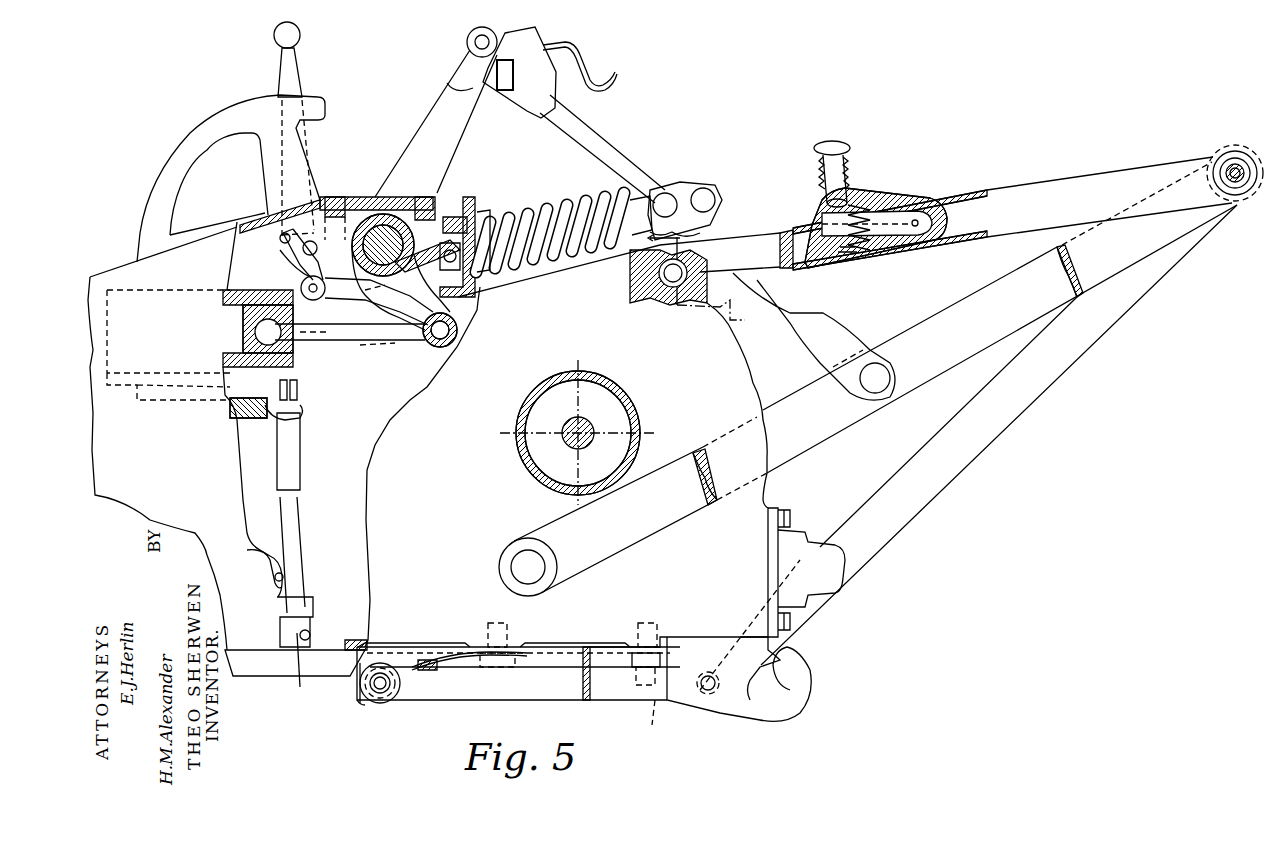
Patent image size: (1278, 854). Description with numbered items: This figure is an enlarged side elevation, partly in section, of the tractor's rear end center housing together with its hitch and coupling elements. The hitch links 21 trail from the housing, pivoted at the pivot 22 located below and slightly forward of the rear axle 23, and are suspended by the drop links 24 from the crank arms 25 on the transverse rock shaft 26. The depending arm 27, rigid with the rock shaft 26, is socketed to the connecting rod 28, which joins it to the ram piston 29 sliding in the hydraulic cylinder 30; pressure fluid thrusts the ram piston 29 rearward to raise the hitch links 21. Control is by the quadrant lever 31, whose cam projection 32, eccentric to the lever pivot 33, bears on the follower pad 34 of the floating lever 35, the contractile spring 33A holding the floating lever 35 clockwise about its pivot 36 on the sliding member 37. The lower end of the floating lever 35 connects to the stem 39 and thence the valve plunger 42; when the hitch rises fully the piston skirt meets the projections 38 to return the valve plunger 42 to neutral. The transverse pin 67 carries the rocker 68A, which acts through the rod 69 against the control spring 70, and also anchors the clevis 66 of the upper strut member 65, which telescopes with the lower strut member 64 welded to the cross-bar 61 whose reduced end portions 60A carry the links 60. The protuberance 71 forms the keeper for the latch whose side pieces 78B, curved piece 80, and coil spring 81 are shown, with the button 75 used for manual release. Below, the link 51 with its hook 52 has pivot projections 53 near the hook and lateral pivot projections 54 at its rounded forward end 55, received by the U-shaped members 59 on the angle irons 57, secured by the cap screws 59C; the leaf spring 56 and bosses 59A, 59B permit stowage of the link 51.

The hitch links 21 is at (935, 330).
The pivot 22 is at (533, 577).
The rear axle 23 is at (578, 433).
The drop links 24 is at (610, 140).
The crank arms 25 is at (450, 125).
The rock shaft 26 is at (377, 233).
The depending arm 27 is at (458, 318).
The connecting rod 28 is at (383, 343).
The ram piston 29 is at (240, 310).
The hydraulic cylinder 30 is at (227, 283).
The quadrant lever 31 is at (283, 72).
The cam projection 32 is at (316, 245).
The lever pivot 33 is at (293, 260).
The contractile spring 33A is at (247, 417).
The follower pad 34 is at (269, 234).
The floating lever 35 is at (303, 357).
The pivot 36 is at (303, 285).
The sliding member 37 is at (379, 302).
The projections 38 is at (323, 343).
The stem 39 is at (313, 633).
The valve plunger 42 is at (296, 670).
The link 51 is at (507, 693).
The hook 52 is at (815, 670).
The pivot projections 53 is at (710, 693).
The lateral pivot projections 54 is at (382, 687).
The rounded forward end 55 is at (380, 703).
The leaf spring 56 is at (453, 650).
The angle irons 57 is at (607, 687).
The U-shaped members 59 is at (363, 687).
The bosses 59A is at (671, 728).
The bosses 59B is at (632, 700).
The cap screws 59C is at (480, 620).
The links 60 is at (993, 423).
The reduced end portions 60A is at (1238, 180).
The cross-bar 61 is at (1232, 150).
The lower strut member 64 is at (1037, 237).
The upper strut member 65 is at (990, 200).
The clevis 66 is at (743, 237).
The transverse pin 67 is at (660, 277).
The rocker 68A is at (697, 187).
The rod 69 is at (577, 227).
The control spring 70 is at (520, 215).
The protuberance 71 is at (887, 190).
The button 75 is at (833, 140).
The side pieces 78B is at (887, 232).
The curved piece 80 is at (933, 217).
The coil spring 81 is at (840, 255).